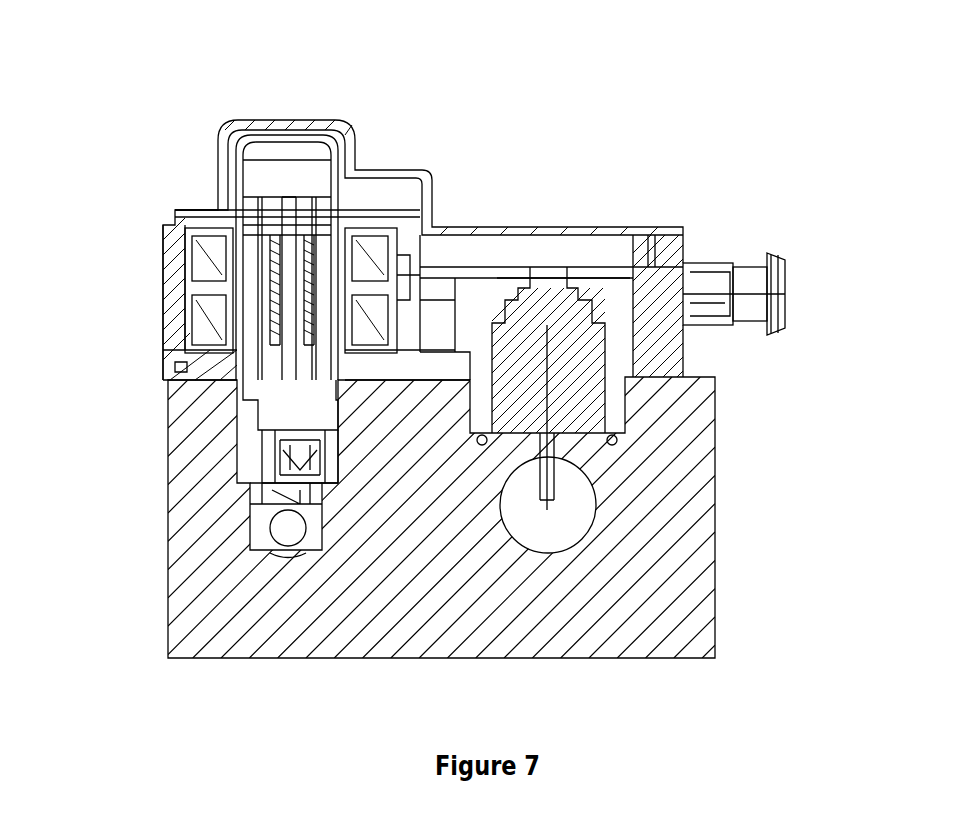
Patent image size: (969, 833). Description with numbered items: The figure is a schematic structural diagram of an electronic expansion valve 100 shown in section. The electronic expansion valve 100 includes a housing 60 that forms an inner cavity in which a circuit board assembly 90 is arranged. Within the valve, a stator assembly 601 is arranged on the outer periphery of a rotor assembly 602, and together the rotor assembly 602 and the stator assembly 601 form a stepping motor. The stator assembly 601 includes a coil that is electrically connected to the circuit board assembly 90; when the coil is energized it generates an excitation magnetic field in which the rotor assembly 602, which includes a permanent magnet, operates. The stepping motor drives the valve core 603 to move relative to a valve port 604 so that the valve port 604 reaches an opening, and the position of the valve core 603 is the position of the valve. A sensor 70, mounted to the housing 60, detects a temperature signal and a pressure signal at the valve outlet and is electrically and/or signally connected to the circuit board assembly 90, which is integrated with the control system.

The electronic expansion valve 100 is at (353, 103).
The housing 60 is at (443, 192).
The stator assembly 601 is at (205, 262).
The rotor assembly 602 is at (240, 212).
The valve core 603 is at (270, 460).
The valve port 604 is at (250, 485).
The circuit board assembly 90 is at (593, 270).
The sensor 70 is at (683, 268).